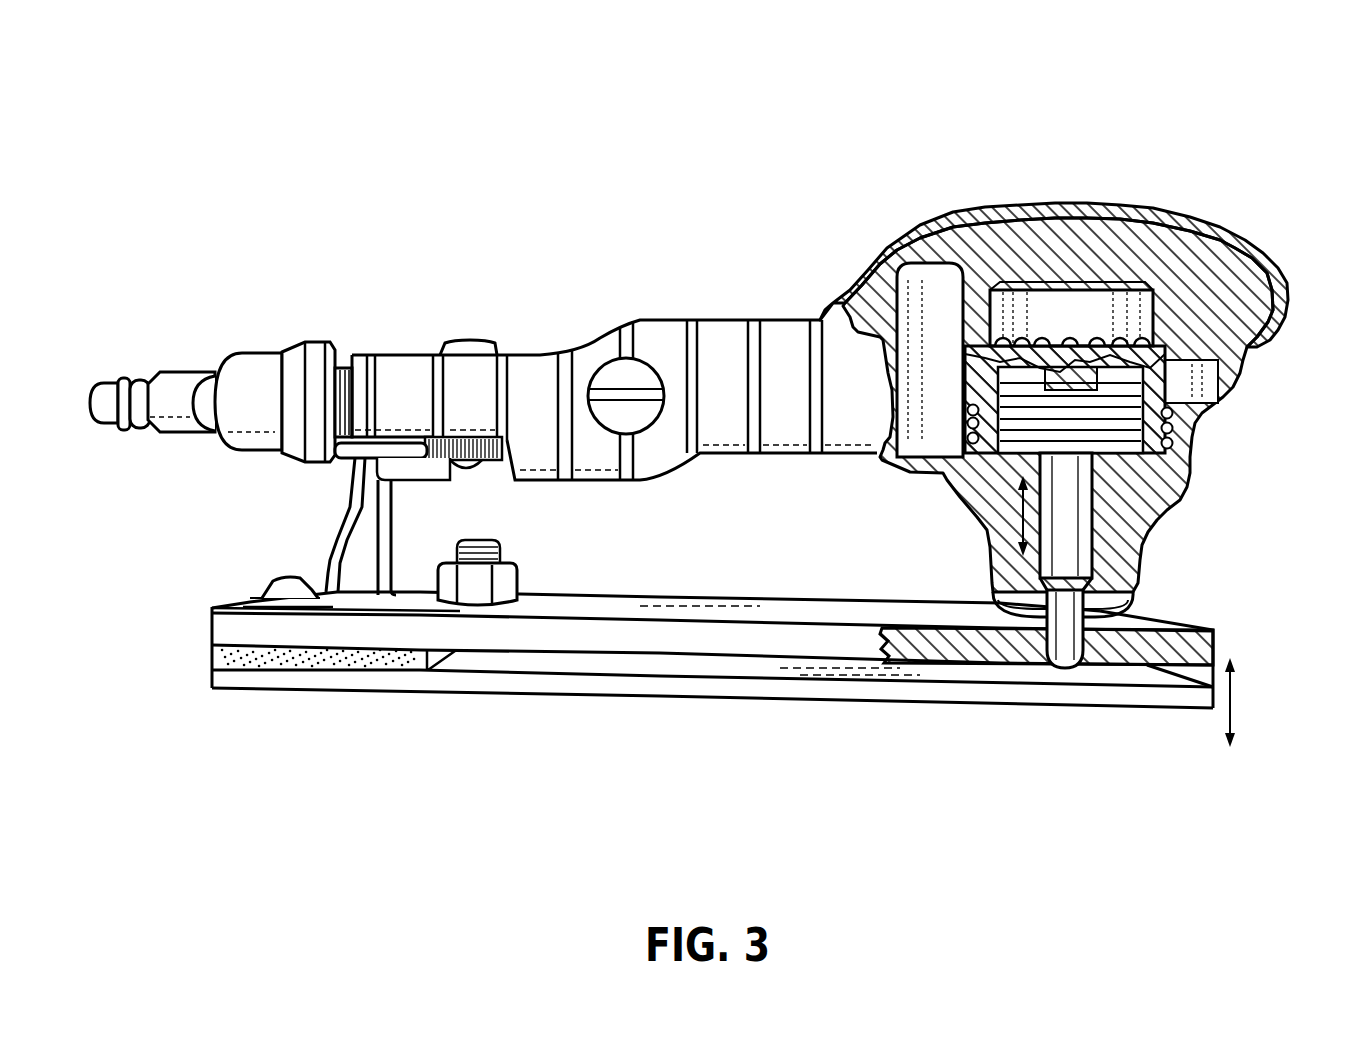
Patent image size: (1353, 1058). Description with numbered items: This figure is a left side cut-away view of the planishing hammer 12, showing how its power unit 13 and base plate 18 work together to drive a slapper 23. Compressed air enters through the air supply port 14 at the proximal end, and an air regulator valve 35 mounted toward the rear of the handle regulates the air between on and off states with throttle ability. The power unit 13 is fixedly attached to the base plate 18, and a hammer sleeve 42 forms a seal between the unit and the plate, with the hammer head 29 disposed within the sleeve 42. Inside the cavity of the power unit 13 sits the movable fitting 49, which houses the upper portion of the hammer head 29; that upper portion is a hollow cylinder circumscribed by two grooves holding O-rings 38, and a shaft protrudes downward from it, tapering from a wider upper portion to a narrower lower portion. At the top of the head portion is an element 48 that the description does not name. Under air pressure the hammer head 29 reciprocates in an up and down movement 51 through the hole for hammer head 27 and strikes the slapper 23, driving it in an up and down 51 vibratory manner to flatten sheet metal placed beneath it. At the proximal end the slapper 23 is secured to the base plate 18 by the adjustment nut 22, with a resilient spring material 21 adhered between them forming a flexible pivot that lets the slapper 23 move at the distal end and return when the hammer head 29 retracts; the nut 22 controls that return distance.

The planishing hammer 12 is at (725, 124).
The power unit 13 is at (1143, 527).
The air supply port 14 is at (253, 370).
The base plate 18 is at (762, 613).
The spring material 21 is at (300, 657).
The adjustment nut 22 is at (507, 580).
The slapper 23 is at (666, 690).
The hole for hammer head 27 is at (968, 638).
The hammer head 29 is at (1062, 660).
The air regulator valve 35 is at (398, 452).
The O-rings 38 is at (1150, 447).
The hammer sleeve 42 is at (1198, 612).
The cover cap 48 is at (1155, 212).
The movable fitting 49 is at (1157, 393).
The up and down movement 51 is at (1062, 518).